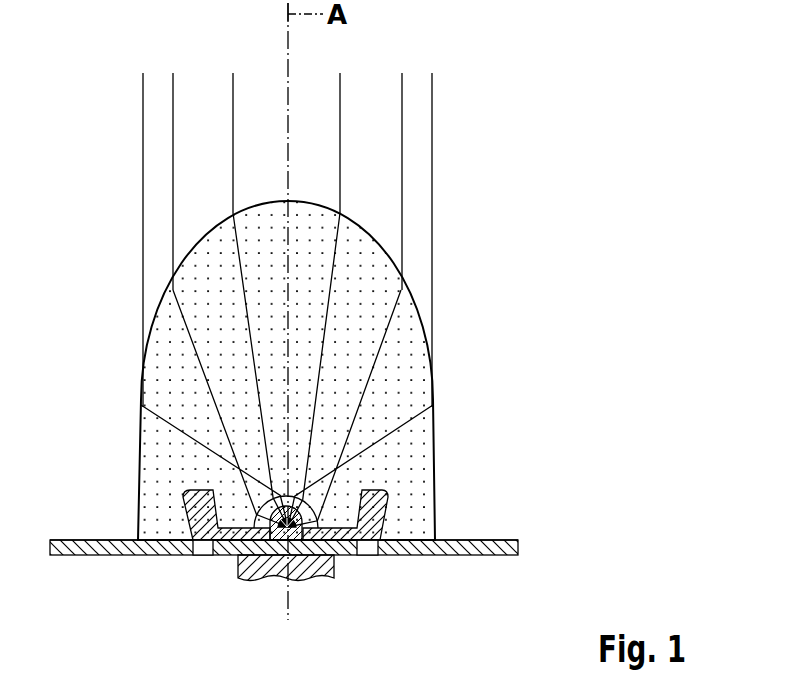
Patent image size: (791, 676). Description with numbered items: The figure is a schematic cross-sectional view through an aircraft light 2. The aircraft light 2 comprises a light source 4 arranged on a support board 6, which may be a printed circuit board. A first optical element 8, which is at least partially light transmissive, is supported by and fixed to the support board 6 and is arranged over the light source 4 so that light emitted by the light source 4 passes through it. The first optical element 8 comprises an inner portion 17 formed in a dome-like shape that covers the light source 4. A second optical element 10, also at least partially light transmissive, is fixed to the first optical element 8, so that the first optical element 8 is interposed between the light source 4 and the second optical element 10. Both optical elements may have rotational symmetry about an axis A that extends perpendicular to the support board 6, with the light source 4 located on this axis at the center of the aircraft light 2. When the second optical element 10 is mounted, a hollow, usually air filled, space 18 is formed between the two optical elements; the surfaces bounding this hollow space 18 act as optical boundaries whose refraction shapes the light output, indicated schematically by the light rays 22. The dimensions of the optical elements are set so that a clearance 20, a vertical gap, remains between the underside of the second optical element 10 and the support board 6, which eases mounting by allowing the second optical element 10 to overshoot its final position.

The aircraft light 2 is at (530, 72).
The light source 4 is at (280, 528).
The support board 6 is at (478, 556).
The first optical element 8 is at (378, 512).
The second optical element 10 is at (420, 300).
The inner portion 17 is at (318, 490).
The hollow space 18 is at (238, 512).
The clearance 20 is at (445, 537).
The light rays 22 is at (110, 168).